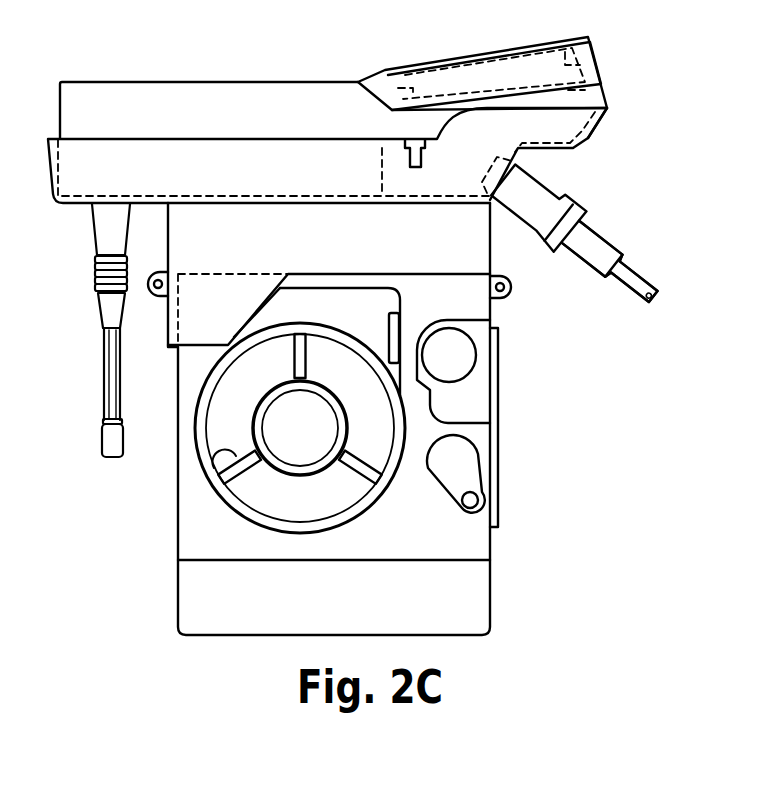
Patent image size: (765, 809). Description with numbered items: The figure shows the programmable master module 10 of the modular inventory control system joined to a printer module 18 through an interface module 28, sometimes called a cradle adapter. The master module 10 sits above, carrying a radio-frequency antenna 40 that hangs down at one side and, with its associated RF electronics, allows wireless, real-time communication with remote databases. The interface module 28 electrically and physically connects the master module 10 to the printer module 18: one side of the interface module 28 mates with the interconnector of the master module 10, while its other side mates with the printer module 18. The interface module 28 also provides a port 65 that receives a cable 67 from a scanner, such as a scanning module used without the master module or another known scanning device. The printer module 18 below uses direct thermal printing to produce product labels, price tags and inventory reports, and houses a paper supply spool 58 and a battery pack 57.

The master module 10 is at (588, 37).
The interface module 28 is at (596, 139).
The port 65 is at (518, 163).
The cable 67 is at (609, 253).
The radio-frequency antenna 40 is at (97, 263).
The paper supply spool 58 is at (216, 462).
The battery pack 57 is at (178, 592).
The printer module 18 is at (498, 505).